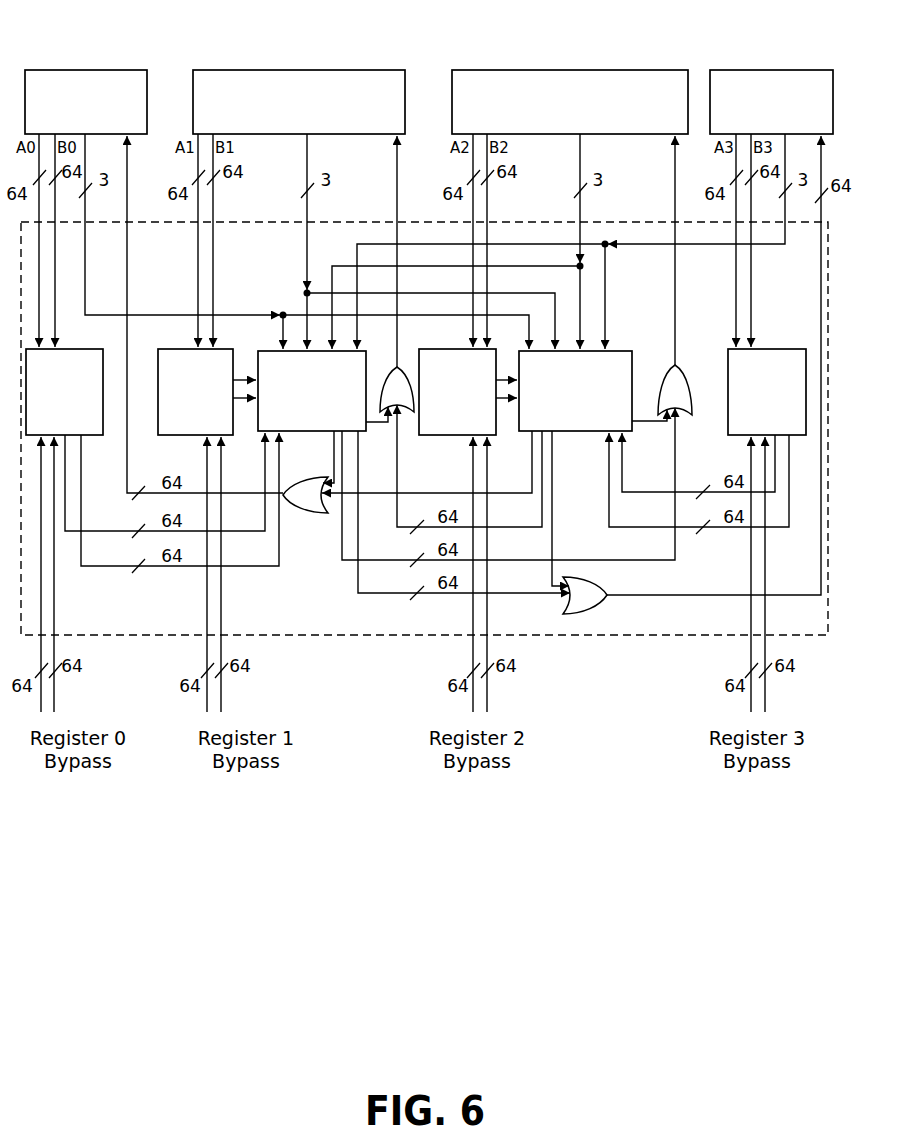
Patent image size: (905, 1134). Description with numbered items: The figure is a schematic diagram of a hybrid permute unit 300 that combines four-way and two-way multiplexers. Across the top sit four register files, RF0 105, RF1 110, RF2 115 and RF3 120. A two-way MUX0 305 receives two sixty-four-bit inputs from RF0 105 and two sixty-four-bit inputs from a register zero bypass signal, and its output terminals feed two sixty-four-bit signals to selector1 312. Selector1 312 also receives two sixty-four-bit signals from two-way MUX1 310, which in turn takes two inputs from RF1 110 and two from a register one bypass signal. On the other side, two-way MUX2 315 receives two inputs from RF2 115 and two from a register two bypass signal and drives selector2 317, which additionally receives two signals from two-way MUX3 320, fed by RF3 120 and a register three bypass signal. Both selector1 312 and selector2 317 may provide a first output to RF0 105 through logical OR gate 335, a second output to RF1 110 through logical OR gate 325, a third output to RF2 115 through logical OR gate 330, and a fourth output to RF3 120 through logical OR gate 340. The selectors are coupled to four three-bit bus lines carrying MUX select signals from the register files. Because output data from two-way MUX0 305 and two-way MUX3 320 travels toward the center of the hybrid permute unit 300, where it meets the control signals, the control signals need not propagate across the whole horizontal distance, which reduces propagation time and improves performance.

The hybrid permute unit 300 is at (415, 214).
The RF0 105 is at (127, 104).
The RF1 110 is at (340, 104).
The RF2 115 is at (611, 104).
The RF3 120 is at (812, 104).
The 2-way MUX0 305 is at (46, 428).
The 2-way MUX1 310 is at (177, 428).
The selector1 312 is at (294, 417).
The 2-way MUX2 315 is at (439, 428).
The selector2 317 is at (557, 417).
The 2-way MUX3 320 is at (749, 428).
The logical OR gate 325 is at (409, 374).
The logical OR gate 330 is at (688, 368).
The logical OR gate 335 is at (307, 517).
The logical OR gate 340 is at (590, 614).